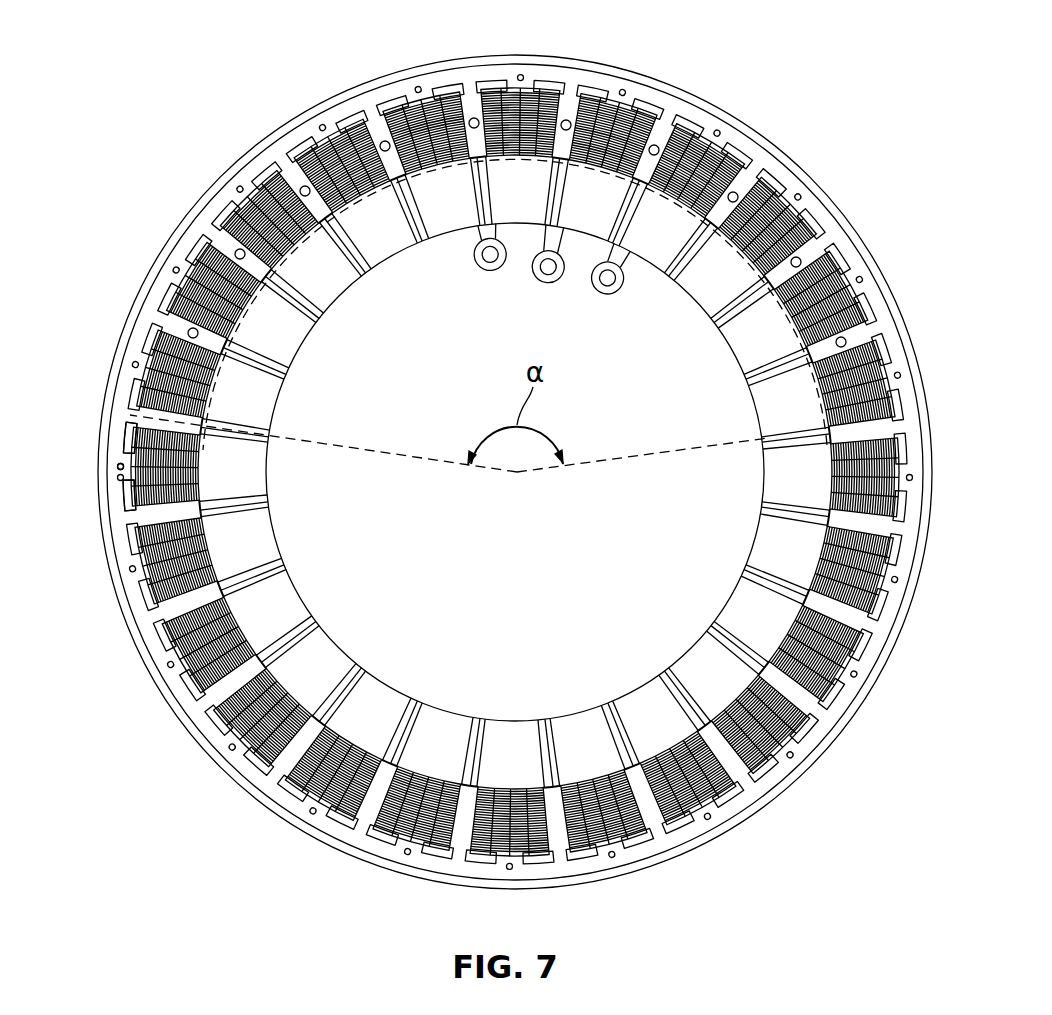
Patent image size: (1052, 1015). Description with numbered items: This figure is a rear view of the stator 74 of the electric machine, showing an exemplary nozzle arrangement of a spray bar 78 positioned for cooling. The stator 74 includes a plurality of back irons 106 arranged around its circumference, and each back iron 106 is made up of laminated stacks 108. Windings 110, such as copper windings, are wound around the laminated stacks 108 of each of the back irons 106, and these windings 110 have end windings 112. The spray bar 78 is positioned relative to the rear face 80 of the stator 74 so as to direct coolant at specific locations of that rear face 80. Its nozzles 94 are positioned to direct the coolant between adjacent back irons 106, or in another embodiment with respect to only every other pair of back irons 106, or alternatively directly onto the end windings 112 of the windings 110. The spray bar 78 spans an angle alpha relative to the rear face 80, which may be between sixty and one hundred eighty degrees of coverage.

The stator 74 is at (876, 163).
The spray bar 78 is at (820, 393).
The rear face 80 is at (855, 268).
The nozzles 94 is at (385, 141).
The back irons 106 is at (441, 216).
The laminated stacks 108 is at (173, 265).
The windings 110 is at (122, 474).
The end windings 112 is at (127, 440).